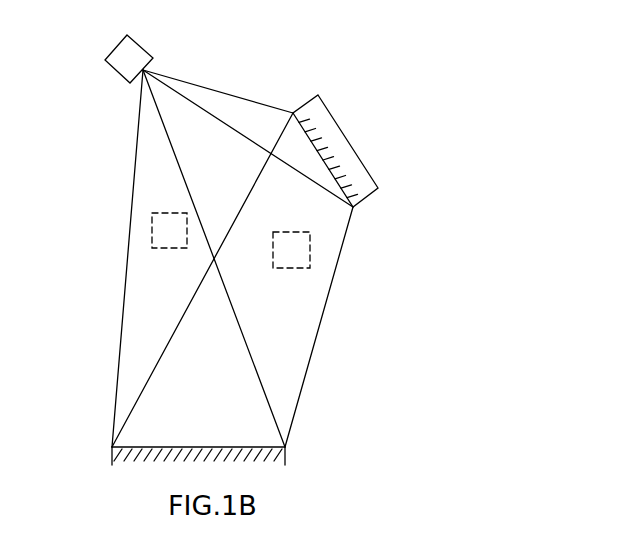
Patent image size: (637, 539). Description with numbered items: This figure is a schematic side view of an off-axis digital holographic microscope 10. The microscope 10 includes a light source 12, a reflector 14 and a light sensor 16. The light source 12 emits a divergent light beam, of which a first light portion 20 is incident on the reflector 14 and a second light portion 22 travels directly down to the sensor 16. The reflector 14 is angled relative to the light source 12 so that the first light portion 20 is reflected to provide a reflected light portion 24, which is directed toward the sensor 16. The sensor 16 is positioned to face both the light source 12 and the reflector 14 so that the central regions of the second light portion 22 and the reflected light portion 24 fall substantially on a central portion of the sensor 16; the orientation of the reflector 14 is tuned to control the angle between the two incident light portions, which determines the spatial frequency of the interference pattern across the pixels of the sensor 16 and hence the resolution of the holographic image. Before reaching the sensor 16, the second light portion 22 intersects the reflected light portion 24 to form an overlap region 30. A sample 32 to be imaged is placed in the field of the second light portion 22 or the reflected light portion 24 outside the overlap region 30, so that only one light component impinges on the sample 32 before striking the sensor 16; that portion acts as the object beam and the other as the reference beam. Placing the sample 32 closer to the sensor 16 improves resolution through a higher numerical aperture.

The off-axis digital holographic microscope 10 is at (300, 48).
The light source 12 is at (128, 60).
The reflector 14 is at (335, 148).
The light sensor 16 is at (140, 452).
The first light portion 20 is at (200, 97).
The second light portion 22 is at (158, 155).
The reflected light portion 24 is at (330, 245).
The overlap region 30 is at (230, 413).
The sample 32 is at (165, 224).